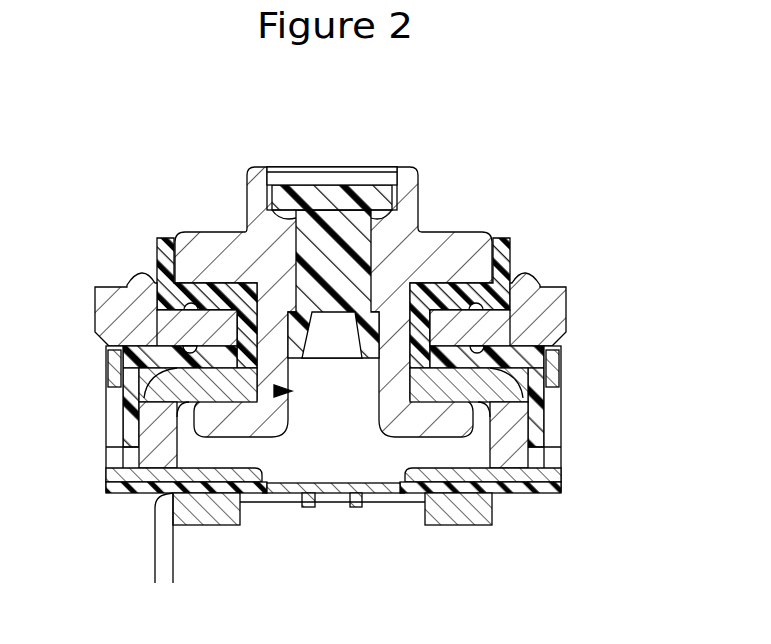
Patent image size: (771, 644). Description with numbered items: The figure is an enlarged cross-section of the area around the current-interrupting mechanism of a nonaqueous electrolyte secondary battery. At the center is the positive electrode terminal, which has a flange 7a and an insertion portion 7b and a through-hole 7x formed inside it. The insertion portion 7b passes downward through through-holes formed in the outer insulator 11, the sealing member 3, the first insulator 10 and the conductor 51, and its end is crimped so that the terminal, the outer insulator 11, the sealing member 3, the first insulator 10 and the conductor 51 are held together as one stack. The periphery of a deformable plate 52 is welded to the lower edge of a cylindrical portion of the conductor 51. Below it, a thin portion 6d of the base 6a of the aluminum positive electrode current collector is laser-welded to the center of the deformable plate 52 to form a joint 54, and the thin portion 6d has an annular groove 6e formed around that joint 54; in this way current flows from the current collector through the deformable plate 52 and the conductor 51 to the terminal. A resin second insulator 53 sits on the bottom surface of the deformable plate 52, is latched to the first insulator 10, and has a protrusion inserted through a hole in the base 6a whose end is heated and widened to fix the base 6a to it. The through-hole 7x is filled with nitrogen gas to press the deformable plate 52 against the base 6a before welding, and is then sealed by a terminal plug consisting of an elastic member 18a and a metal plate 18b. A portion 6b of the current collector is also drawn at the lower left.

The metal plate 18b is at (286, 170).
The elastic member 18a is at (305, 247).
The flange 7a is at (448, 248).
The outer insulator 11 is at (508, 248).
The sealing member 3 is at (557, 295).
The first insulator 10 is at (522, 352).
The conductor 51 is at (525, 467).
The through-hole 7x is at (290, 392).
The insertion portion 7b is at (112, 359).
The second insulator 53 is at (135, 486).
The deformable plate 52 is at (213, 478).
The joint 54 is at (355, 500).
The thin portion 6d is at (290, 500).
The base 6a is at (227, 522).
The annular groove 6e is at (263, 497).
The base wire 6b is at (160, 557).